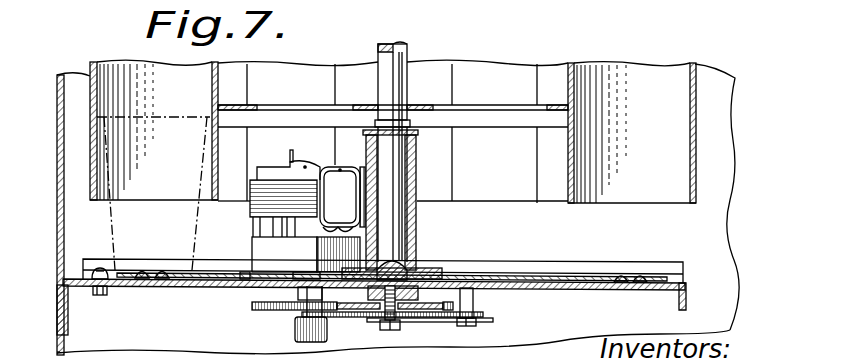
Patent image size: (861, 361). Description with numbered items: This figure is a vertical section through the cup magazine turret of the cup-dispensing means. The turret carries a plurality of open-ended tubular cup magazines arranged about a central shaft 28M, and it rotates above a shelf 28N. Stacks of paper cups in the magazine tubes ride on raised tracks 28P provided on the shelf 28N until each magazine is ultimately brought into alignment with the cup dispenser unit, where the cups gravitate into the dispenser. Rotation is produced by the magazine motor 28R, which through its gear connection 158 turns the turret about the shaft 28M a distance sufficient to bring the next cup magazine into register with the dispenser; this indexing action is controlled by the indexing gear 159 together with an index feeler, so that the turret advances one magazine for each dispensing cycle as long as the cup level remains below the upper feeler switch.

The central shaft 28M is at (408, 54).
The motor 28R is at (335, 185).
The shelf 28N is at (560, 246).
The raised tracks 28P is at (163, 268).
The gear connection 158 is at (252, 306).
The indexing gear 159 is at (352, 320).